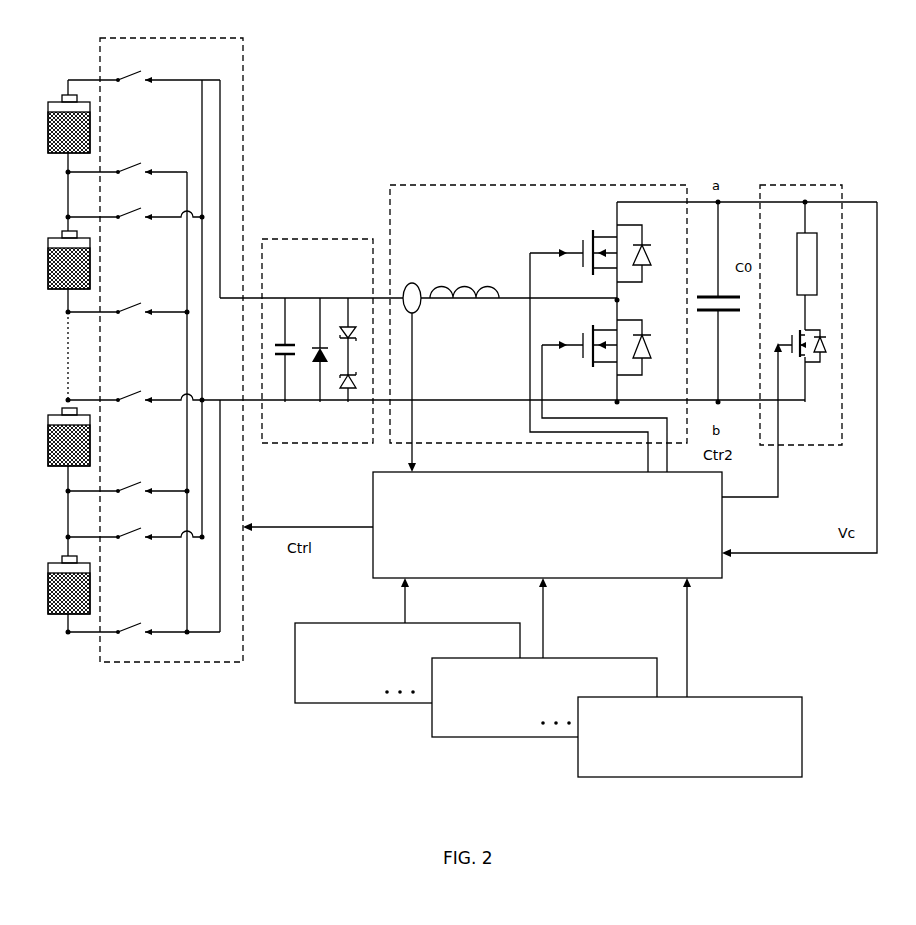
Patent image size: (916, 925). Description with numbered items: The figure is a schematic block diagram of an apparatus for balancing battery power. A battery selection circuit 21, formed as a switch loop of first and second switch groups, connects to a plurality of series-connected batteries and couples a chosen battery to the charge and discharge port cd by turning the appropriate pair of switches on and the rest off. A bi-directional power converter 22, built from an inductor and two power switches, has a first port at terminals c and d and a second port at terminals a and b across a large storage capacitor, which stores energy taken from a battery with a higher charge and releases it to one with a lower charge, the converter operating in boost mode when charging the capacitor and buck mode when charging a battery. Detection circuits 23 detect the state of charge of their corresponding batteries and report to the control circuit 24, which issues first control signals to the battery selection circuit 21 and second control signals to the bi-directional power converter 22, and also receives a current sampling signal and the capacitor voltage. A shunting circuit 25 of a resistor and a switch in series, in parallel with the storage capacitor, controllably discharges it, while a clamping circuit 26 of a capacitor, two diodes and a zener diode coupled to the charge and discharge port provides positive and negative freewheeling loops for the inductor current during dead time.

The battery selection circuit 21 is at (243, 62).
The bi-directional power converter 22 is at (470, 183).
The detection circuits 23 is at (708, 778).
The control circuit 24 is at (705, 582).
The shunting circuit 25 is at (770, 183).
The clamping circuit 26 is at (282, 238).